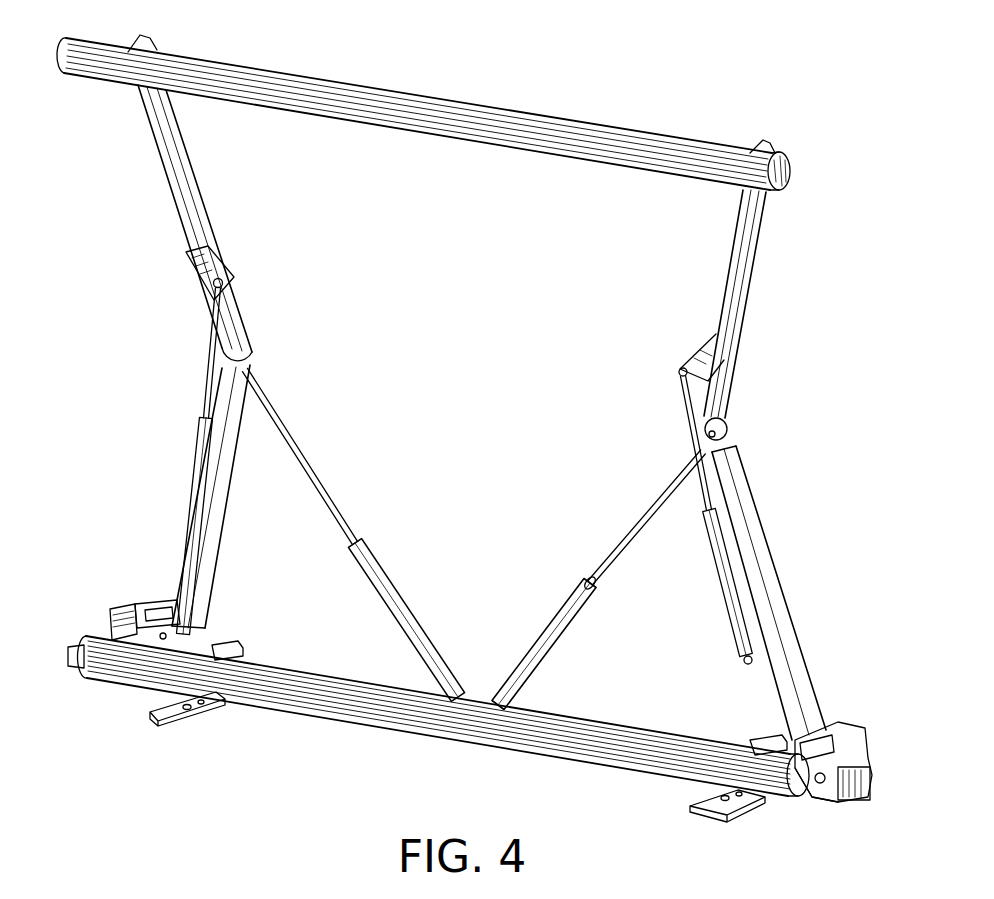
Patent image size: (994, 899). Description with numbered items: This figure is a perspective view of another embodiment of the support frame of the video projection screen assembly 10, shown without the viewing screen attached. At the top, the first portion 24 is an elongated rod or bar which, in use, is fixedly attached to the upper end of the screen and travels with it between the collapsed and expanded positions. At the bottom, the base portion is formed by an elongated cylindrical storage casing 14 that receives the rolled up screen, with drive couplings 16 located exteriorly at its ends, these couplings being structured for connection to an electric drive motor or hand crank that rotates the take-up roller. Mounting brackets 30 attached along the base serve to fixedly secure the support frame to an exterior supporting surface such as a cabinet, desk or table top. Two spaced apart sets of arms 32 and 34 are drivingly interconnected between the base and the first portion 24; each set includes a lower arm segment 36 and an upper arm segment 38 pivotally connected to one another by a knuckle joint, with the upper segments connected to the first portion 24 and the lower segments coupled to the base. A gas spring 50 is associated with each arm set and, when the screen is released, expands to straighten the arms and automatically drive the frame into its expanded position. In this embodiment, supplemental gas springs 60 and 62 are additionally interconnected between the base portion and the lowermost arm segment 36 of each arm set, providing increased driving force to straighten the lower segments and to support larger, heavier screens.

The video projection screen assembly 10 is at (664, 96).
The storage casing 14 is at (340, 710).
The drive coupling 16 is at (80, 637).
The first portion 24 is at (490, 112).
The mounting bracket 30 is at (157, 720).
The set of arms 32 is at (160, 348).
The set of arms 34 is at (780, 412).
The lower arm segment 36 is at (178, 583).
The upper arm segment 38 is at (183, 162).
The gas spring 50 is at (180, 442).
The supplemental gas spring 60 is at (390, 555).
The supplemental gas spring 62 is at (555, 584).